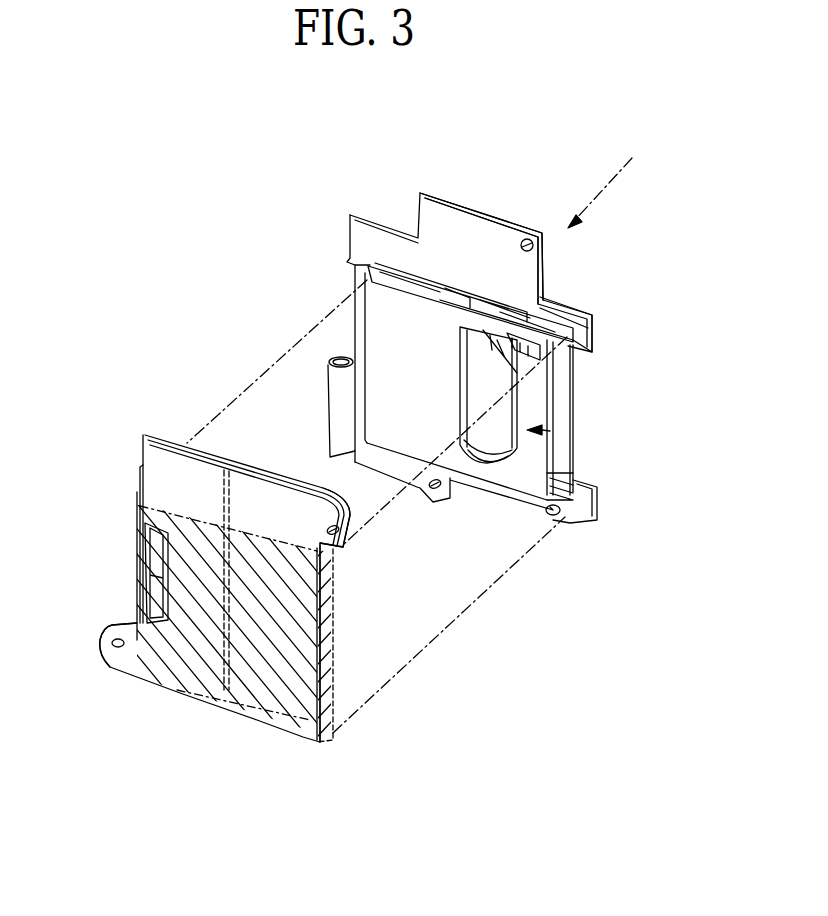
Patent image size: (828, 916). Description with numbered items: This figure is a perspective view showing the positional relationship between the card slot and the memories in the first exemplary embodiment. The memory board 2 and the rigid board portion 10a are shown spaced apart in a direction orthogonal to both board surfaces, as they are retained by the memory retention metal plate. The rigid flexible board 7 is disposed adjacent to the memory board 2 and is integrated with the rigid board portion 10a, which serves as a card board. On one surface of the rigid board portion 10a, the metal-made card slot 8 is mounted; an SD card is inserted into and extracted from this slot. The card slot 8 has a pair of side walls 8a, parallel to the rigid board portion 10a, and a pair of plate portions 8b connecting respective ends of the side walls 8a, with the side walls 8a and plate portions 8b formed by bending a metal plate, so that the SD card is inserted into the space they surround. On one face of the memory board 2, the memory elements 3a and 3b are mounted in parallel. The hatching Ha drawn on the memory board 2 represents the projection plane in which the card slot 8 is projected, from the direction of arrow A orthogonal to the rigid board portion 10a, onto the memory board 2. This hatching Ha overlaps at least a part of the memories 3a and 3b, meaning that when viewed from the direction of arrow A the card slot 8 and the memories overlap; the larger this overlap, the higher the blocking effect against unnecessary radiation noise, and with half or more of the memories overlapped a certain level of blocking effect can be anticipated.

The memory board 2 is at (267, 595).
The memory element 3a is at (318, 520).
The memory element 3b is at (335, 638).
The rigid flexible board 7 is at (476, 349).
The card slot 8 is at (560, 440).
The side wall 8a is at (502, 423).
The plate portion 8b is at (560, 318).
The rigid board portion 10a is at (458, 217).
The hatching Ha is at (165, 680).
The arrow A is at (600, 192).